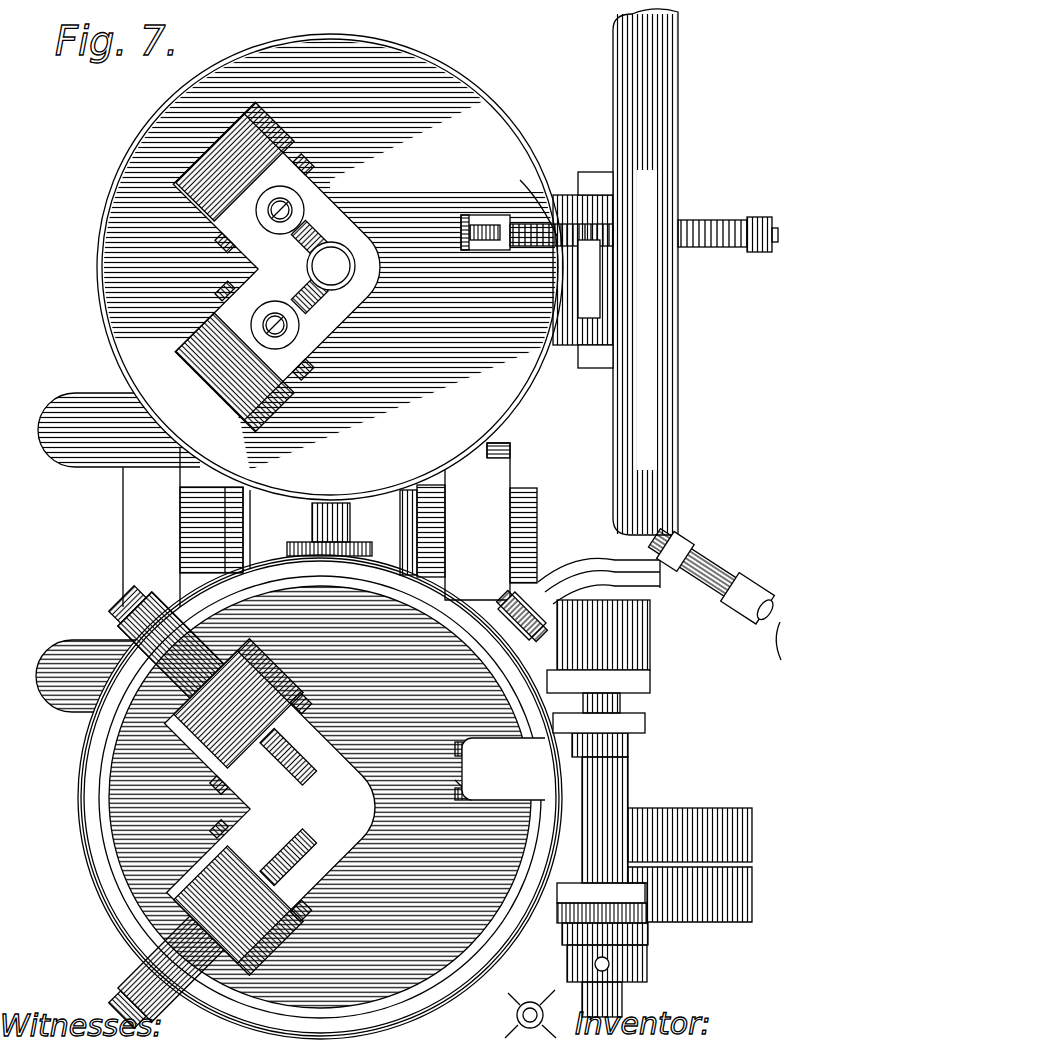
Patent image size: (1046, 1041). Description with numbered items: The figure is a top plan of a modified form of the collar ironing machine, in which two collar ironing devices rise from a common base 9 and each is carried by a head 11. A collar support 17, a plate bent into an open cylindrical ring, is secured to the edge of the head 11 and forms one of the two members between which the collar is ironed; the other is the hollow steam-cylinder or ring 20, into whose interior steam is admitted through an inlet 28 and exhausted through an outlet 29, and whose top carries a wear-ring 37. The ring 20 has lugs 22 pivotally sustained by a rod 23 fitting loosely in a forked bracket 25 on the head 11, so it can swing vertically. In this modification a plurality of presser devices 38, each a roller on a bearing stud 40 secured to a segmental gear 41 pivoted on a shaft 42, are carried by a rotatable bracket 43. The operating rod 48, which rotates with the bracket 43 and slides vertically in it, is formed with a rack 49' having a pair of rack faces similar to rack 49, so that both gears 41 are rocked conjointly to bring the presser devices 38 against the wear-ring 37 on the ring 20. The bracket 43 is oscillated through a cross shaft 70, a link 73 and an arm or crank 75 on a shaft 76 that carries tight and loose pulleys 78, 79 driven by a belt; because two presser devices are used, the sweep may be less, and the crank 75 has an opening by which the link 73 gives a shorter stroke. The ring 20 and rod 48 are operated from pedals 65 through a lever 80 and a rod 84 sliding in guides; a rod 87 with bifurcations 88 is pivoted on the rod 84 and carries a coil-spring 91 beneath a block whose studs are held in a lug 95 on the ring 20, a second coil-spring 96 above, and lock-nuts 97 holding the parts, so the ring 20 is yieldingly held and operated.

The common base 9 is at (227, 530).
The head 11 is at (420, 446).
The collar support 17 is at (99, 270).
The steam-cylinder 20 is at (117, 180).
The lugs 22 is at (594, 178).
The rod 23 is at (600, 303).
The forked bracket 25 is at (574, 196).
The inlet 28 is at (637, 568).
The outlet 29 is at (517, 1015).
The wear-ring 37 is at (679, 155).
The presser device 38 is at (280, 188).
The bearing stud 40 is at (122, 995).
The segmental gear 41 is at (316, 232).
The shaft 42 is at (226, 252).
The rotatable bracket 43 is at (256, 267).
The operating rod 48 is at (345, 267).
The rack 49 is at (370, 811).
The rack 49' is at (380, 229).
The pedals 65 is at (94, 468).
The cross shaft 70 is at (350, 523).
The link 73 is at (587, 586).
The arm 75 is at (651, 625).
The shaft 76 is at (621, 703).
The tight pulley 78 is at (745, 890).
The loose pulley 79 is at (740, 836).
The lever 80 is at (468, 521).
The rod 84 is at (461, 232).
The rod 87 is at (440, 806).
The bifurcations 88 is at (490, 222).
The coil-spring 91 is at (556, 242).
The lug 95 is at (503, 769).
The coil-spring 96 is at (711, 230).
The lock-nuts 97 is at (765, 210).